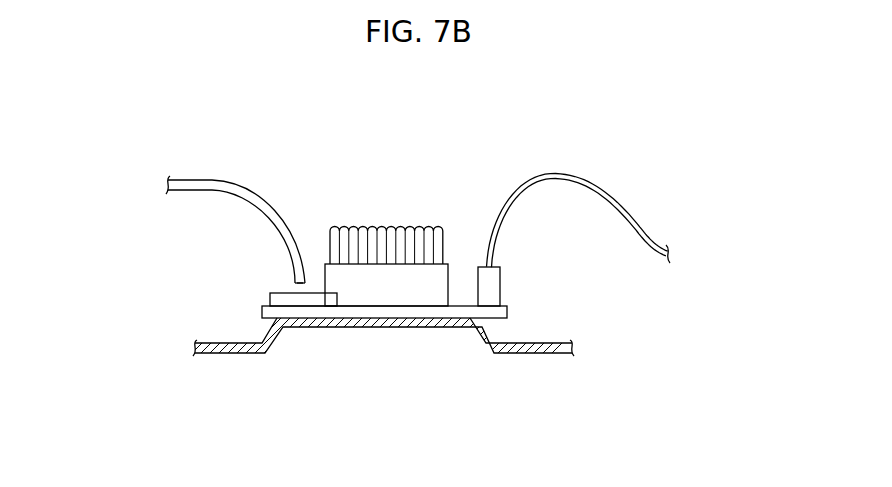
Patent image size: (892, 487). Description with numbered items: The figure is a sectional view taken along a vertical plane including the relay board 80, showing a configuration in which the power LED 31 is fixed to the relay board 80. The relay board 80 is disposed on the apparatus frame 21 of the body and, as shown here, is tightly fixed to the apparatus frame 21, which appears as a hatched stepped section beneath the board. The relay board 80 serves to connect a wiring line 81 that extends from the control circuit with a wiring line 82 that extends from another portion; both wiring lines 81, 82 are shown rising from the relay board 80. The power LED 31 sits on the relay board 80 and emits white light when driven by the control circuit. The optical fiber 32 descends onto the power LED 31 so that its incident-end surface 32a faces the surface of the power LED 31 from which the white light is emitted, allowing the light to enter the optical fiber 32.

The apparatus frame 21 is at (240, 355).
The power LED 31 is at (285, 293).
The optical fiber 32 is at (238, 182).
The incident-end surface 32a is at (298, 286).
The relay board 80 is at (508, 310).
The wiring line 81 is at (568, 172).
The wiring line 82 is at (390, 226).